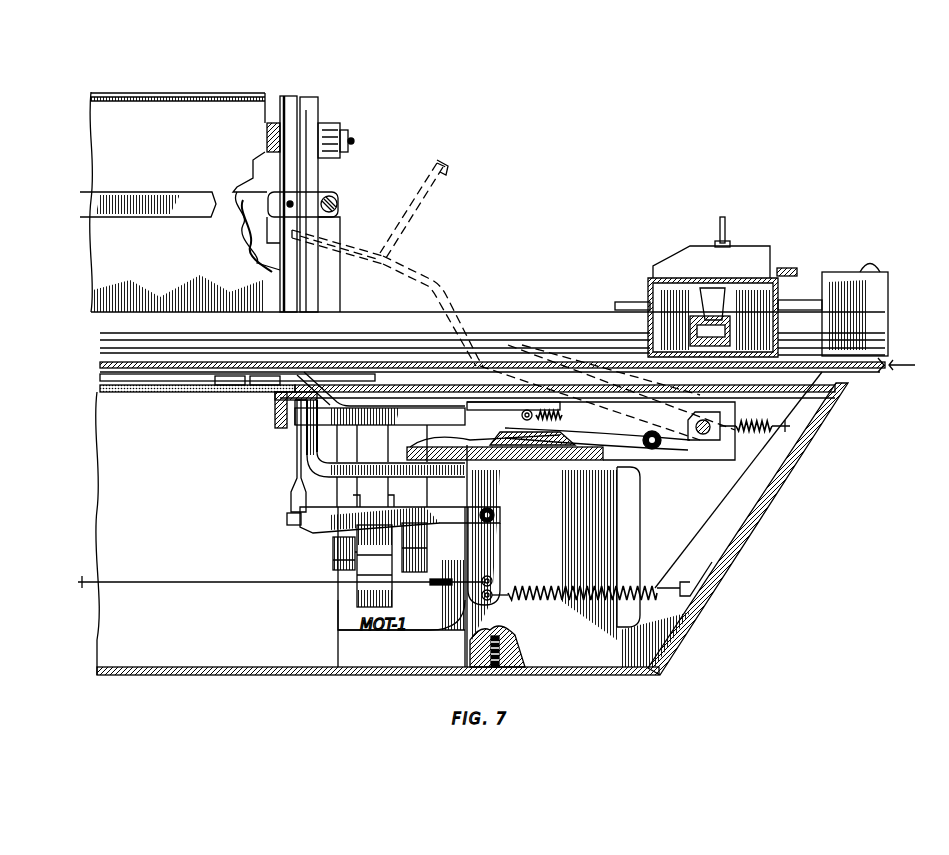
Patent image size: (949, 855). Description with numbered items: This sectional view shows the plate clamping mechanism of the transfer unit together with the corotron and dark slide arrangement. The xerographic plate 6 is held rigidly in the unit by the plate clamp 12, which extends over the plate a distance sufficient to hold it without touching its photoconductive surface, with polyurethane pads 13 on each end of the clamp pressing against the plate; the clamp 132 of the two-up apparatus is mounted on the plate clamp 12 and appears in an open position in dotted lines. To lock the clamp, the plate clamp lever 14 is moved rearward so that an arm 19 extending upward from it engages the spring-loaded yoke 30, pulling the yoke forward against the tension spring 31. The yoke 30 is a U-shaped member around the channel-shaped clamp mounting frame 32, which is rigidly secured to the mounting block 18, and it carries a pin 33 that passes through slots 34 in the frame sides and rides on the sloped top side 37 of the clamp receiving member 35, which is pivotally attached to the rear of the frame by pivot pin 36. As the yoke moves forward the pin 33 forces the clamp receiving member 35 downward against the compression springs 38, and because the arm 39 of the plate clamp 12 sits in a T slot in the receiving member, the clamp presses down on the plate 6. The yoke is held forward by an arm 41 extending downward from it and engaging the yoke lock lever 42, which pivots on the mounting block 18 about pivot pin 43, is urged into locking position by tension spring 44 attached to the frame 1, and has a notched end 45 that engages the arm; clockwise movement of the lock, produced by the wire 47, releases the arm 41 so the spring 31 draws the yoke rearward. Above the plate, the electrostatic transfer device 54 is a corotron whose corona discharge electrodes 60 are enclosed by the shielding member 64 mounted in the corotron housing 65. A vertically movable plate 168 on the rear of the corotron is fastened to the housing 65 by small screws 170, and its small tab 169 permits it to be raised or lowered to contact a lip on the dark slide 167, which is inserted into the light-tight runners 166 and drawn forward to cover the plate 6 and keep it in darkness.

The frame 1 is at (712, 498).
The xerographic plate 6 is at (100, 387).
The plate clamp 12 is at (344, 252).
The polyurethane pads 13 is at (308, 248).
The plate clamp lever 14 is at (411, 465).
The mounting block 18 is at (606, 514).
The arm 19 is at (305, 440).
The yoke 30 is at (397, 424).
The tension spring 31 is at (742, 434).
The clamp mounting frame 32 is at (680, 460).
The pin 33 is at (515, 427).
The slots 34 is at (437, 163).
The clamp receiving member 35 is at (507, 346).
The pivot pin 36 is at (735, 413).
The top side 37 is at (524, 346).
The compression springs 38 is at (643, 447).
The arm 39 is at (442, 288).
The arm 41 is at (290, 462).
The yoke lock lever 42 is at (313, 533).
The pivot pin 43 is at (495, 515).
The tension spring 44 is at (540, 591).
The notched end 45 is at (287, 519).
The wire 47 is at (258, 583).
The electrostatic transfer device 54 is at (742, 243).
The corona discharge electrodes 60 is at (726, 345).
The shielding member 64 is at (731, 333).
The corotron housing 65 is at (713, 284).
The clamp 132 is at (448, 172).
The light-tight runners 166 is at (850, 370).
The dark slide 167 is at (895, 370).
The vertically movable plate 168 is at (779, 330).
The tab 169 is at (790, 275).
The screws 170 is at (790, 304).